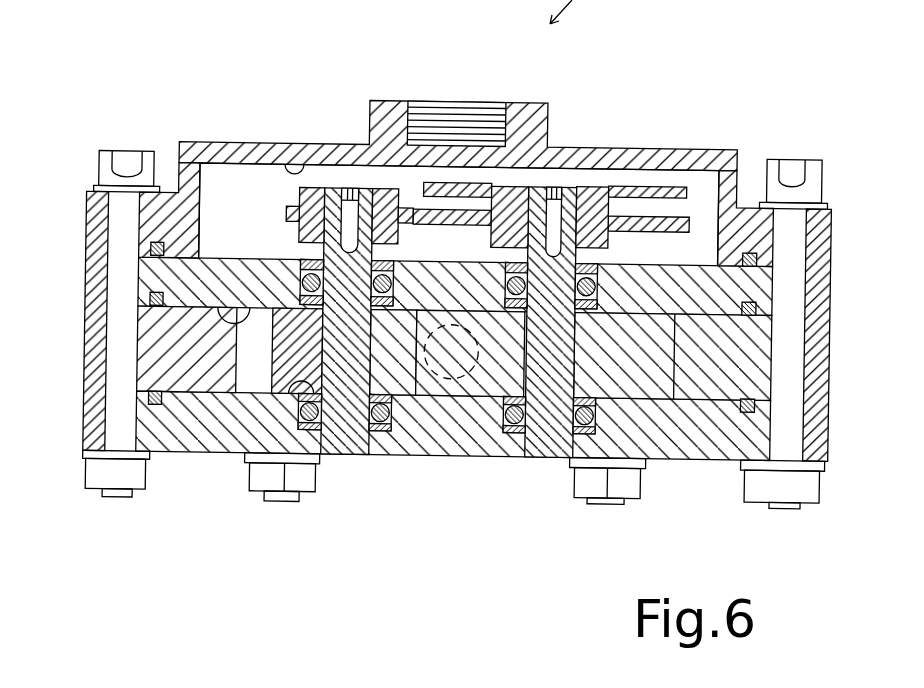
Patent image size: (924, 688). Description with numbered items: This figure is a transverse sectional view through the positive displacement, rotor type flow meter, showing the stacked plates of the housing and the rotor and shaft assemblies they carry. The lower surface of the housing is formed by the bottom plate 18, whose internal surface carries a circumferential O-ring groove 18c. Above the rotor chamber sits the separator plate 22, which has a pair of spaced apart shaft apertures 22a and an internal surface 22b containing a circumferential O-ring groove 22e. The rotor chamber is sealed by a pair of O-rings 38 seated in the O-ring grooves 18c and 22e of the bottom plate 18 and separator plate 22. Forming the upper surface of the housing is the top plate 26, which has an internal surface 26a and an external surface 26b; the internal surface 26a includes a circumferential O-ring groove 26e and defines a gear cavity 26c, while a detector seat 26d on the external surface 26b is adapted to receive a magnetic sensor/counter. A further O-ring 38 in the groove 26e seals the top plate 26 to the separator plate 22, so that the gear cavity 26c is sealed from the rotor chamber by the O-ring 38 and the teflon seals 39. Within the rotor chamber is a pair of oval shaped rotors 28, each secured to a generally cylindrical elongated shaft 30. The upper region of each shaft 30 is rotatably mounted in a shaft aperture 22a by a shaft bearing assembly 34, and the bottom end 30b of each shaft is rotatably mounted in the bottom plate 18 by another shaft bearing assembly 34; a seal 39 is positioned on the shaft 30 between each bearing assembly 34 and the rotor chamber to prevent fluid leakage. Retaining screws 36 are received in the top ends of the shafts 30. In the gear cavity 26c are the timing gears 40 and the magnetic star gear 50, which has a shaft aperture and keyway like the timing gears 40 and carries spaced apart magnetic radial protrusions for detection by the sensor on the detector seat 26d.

The bottom plate 18 is at (184, 440).
The circumferential O-ring groove 18c is at (158, 392).
The separator plate 22 is at (760, 282).
The shaft apertures 22a is at (577, 318).
The internal surface 22b is at (236, 308).
The circumferential O-ring groove 22e is at (758, 310).
The top plate 26 is at (238, 143).
The internal surface 26a is at (302, 160).
The external surface 26b is at (612, 147).
The gear cavity 26c is at (230, 192).
The detector seat 26d is at (468, 142).
The circumferential O-ring groove 26e is at (757, 252).
The oval shaped rotors 28 is at (398, 372).
The elongated shaft 30 is at (345, 355).
The bottom end 30b is at (545, 403).
The shaft bearing assembly 34 is at (303, 262).
The retaining screw 36 is at (342, 190).
The O-rings 38 is at (150, 298).
The seal 39 is at (292, 408).
The timing gears 40 is at (287, 207).
The magnetic star gear 50 is at (632, 192).